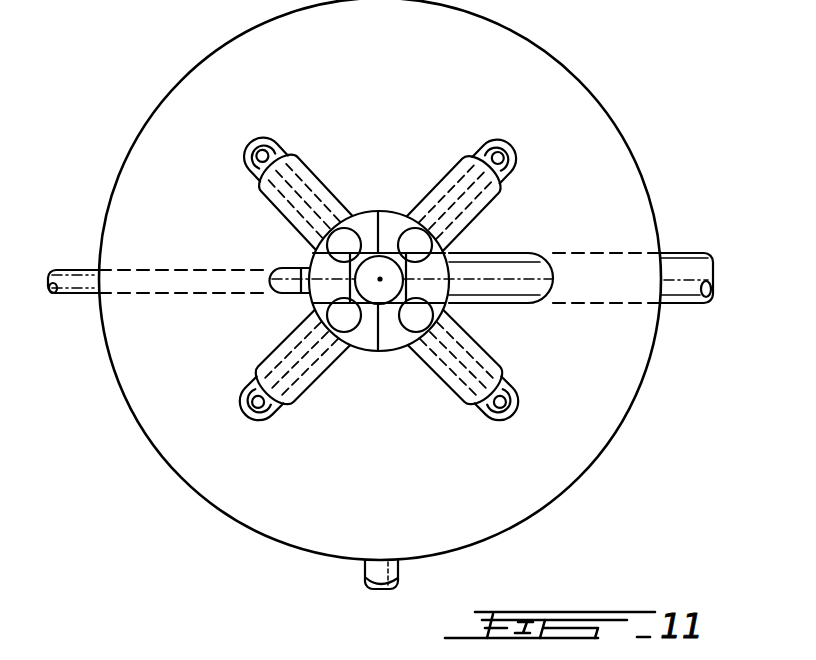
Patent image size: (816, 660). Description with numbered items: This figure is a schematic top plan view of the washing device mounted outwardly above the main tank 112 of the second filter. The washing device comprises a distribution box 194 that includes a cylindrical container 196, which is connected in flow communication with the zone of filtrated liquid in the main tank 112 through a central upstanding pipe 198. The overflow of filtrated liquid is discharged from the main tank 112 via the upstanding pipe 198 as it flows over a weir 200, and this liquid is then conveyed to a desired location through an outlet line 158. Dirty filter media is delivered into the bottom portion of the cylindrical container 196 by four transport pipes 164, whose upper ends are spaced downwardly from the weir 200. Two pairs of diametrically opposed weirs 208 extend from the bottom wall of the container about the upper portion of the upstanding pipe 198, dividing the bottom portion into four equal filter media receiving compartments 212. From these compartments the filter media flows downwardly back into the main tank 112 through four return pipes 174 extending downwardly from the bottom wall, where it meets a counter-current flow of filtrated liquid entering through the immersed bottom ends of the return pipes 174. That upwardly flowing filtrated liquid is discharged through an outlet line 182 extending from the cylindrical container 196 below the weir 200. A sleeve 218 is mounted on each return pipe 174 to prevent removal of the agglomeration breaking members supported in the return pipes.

The main tank 112 is at (604, 453).
The outlet line 158 is at (681, 262).
The transport pipes 164 is at (249, 177).
The return pipes 174 is at (270, 146).
The outlet line 182 is at (78, 294).
The distribution box 194 is at (381, 368).
The cylindrical container 196 is at (378, 209).
The upstanding pipe 198 is at (383, 288).
The weir 200 is at (449, 272).
The weirs 208 is at (303, 258).
The filter media receiving compartments 212 is at (355, 209).
The sleeve 218 is at (472, 212).